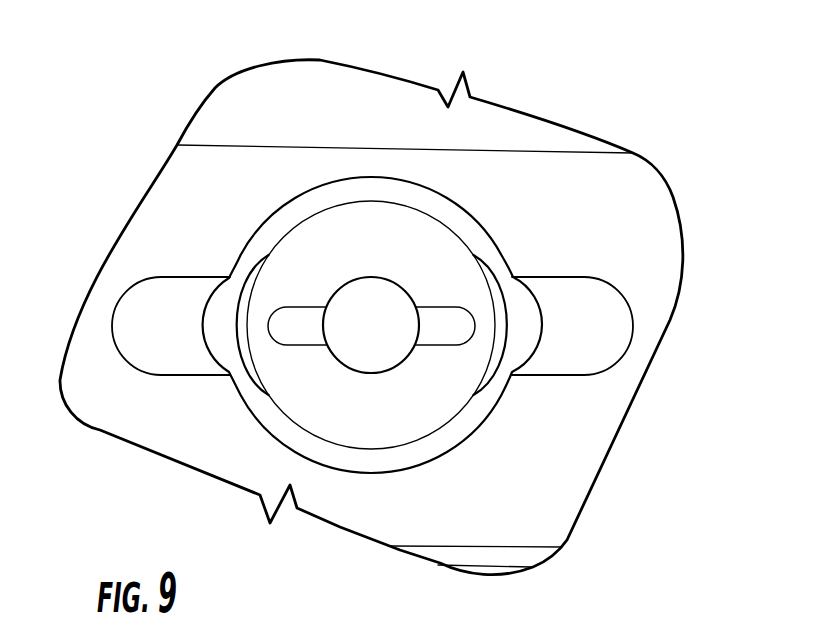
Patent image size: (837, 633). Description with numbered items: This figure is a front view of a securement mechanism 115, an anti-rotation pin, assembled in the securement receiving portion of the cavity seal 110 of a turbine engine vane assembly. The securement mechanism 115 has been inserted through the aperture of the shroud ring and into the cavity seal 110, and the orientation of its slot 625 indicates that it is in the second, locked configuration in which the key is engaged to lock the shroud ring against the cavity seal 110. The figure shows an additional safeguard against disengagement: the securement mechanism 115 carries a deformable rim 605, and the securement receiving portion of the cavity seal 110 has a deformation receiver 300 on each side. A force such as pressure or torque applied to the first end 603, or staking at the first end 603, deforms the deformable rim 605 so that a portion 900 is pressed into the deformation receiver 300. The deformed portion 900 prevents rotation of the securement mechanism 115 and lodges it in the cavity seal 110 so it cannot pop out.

The cavity seal 110 is at (557, 480).
The securement mechanism 115 is at (350, 227).
The deformation receiver 300 is at (137, 345).
The first end 603 is at (363, 333).
The deformable rim 605 is at (260, 392).
The slot 625 is at (452, 330).
The deformed portion 900 is at (200, 315).